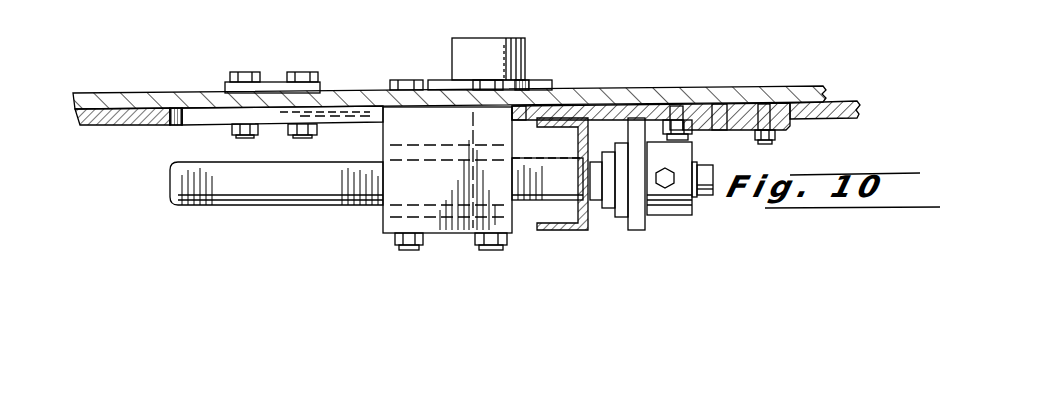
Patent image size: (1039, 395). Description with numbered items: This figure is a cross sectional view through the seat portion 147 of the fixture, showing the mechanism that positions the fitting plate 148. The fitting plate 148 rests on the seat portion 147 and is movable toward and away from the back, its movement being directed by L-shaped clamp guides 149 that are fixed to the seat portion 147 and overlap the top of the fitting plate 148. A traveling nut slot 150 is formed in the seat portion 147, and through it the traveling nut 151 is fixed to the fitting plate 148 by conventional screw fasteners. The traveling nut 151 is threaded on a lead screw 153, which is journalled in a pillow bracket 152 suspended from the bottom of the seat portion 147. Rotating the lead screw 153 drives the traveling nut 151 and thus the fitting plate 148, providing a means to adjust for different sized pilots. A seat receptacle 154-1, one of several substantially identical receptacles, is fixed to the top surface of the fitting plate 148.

The seat portion 147 is at (110, 110).
The fitting plate 148 is at (630, 93).
The L-shaped clamp guides 149 is at (273, 88).
The traveling nut slot 150 is at (188, 112).
The traveling nut 151 is at (447, 178).
The pillow bracket 152 is at (744, 133).
The lead screw 153 is at (276, 183).
The seat receptacle 154-1 is at (477, 43).